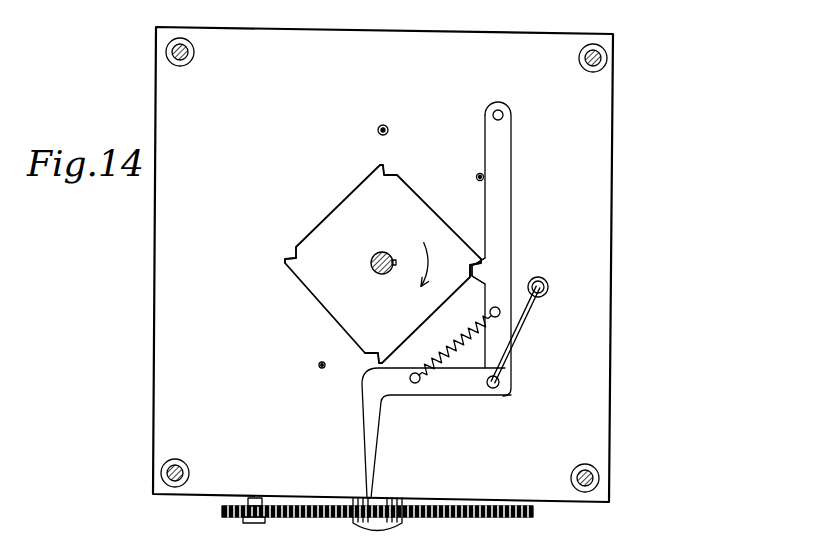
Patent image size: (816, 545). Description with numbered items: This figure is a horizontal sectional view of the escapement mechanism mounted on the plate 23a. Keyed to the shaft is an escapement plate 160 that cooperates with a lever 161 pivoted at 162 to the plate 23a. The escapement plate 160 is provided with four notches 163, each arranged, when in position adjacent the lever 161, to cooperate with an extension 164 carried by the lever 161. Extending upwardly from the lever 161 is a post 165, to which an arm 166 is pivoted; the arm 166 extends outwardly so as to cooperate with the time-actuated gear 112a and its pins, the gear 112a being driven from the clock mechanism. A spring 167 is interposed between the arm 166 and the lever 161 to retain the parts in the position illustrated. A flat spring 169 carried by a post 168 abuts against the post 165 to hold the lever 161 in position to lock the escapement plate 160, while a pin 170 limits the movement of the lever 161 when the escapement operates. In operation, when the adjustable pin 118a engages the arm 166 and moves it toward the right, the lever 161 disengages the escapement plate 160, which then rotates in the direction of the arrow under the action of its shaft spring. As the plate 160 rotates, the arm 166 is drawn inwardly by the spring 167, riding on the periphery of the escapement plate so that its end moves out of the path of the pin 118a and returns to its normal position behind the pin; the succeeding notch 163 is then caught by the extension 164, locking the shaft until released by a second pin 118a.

The plate 23a is at (383, 264).
The escapement plate 160 is at (414, 221).
The lever 161 is at (503, 214).
The pivot 162 is at (506, 116).
The notches 163 is at (391, 174).
The extension 164 is at (483, 271).
The post 165 is at (494, 390).
The arm 166 is at (368, 446).
The spring 167 is at (461, 328).
The post 168 is at (549, 292).
The flat spring 169 is at (519, 338).
The pin 170 is at (477, 174).
The time-actuated gear 112a is at (440, 518).
The adjustable pin 118a is at (262, 523).